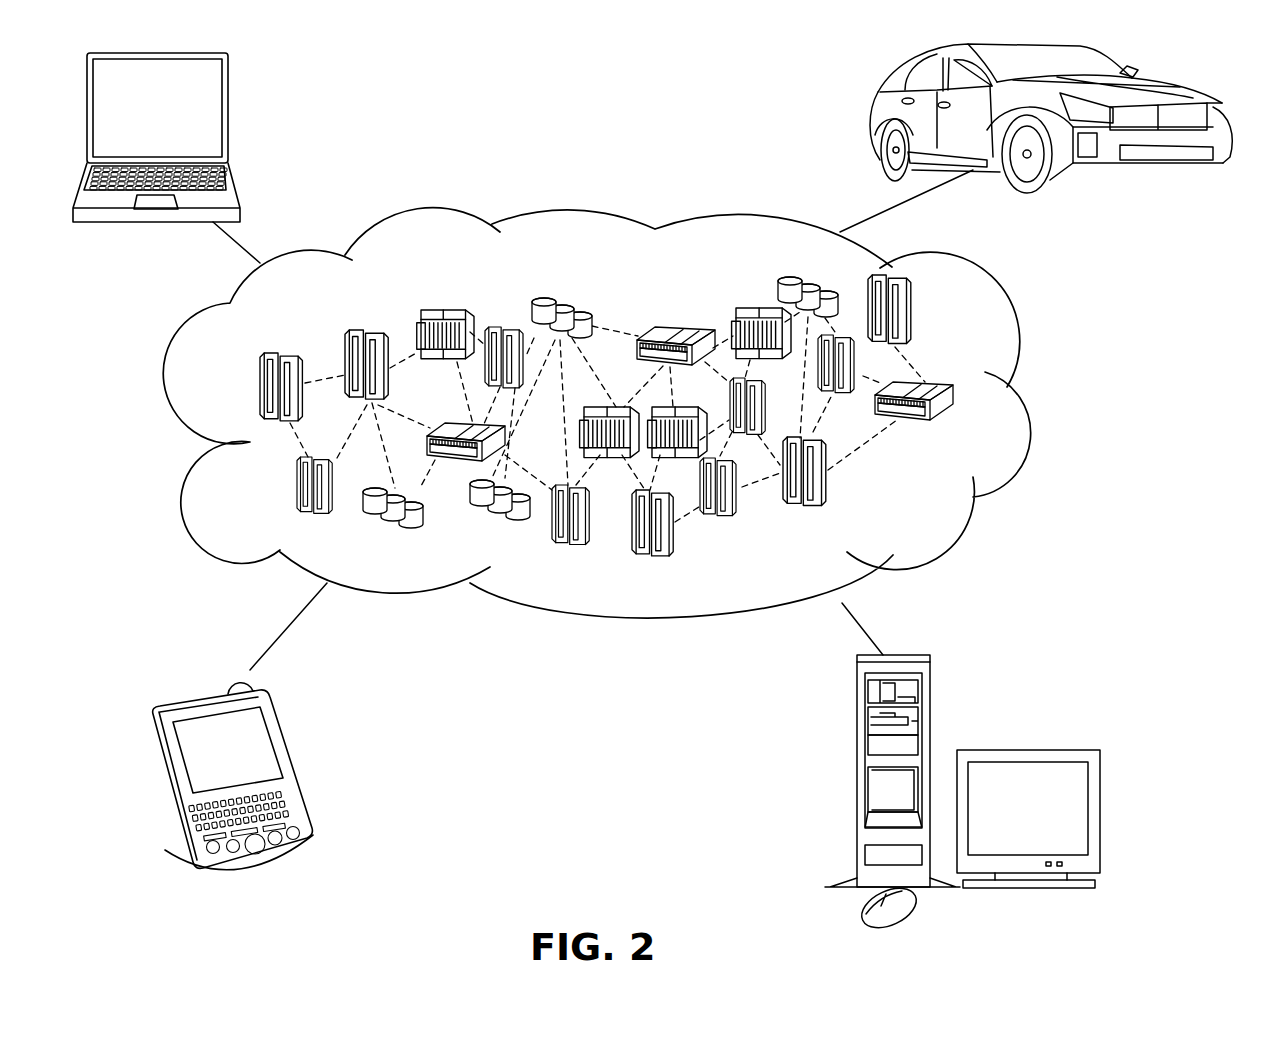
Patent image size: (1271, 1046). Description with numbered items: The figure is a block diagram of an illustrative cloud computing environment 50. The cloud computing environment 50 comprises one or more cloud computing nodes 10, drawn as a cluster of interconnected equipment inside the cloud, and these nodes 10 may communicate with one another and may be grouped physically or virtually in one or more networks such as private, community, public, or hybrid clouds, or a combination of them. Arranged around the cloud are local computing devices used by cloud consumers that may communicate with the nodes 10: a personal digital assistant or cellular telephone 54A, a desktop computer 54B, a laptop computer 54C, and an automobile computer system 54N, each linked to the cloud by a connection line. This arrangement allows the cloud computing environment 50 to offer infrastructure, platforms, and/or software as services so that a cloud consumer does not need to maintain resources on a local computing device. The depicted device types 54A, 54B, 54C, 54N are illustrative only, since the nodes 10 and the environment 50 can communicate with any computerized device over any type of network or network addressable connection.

The cloud computing nodes 10 is at (944, 504).
The cloud computing environment 50 is at (1027, 402).
The personal digital assistant (PDA) or cellular telephone 54A is at (283, 730).
The desktop computer 54B is at (857, 716).
The laptop computer 54C is at (228, 90).
The automobile computer system 54N is at (877, 107).